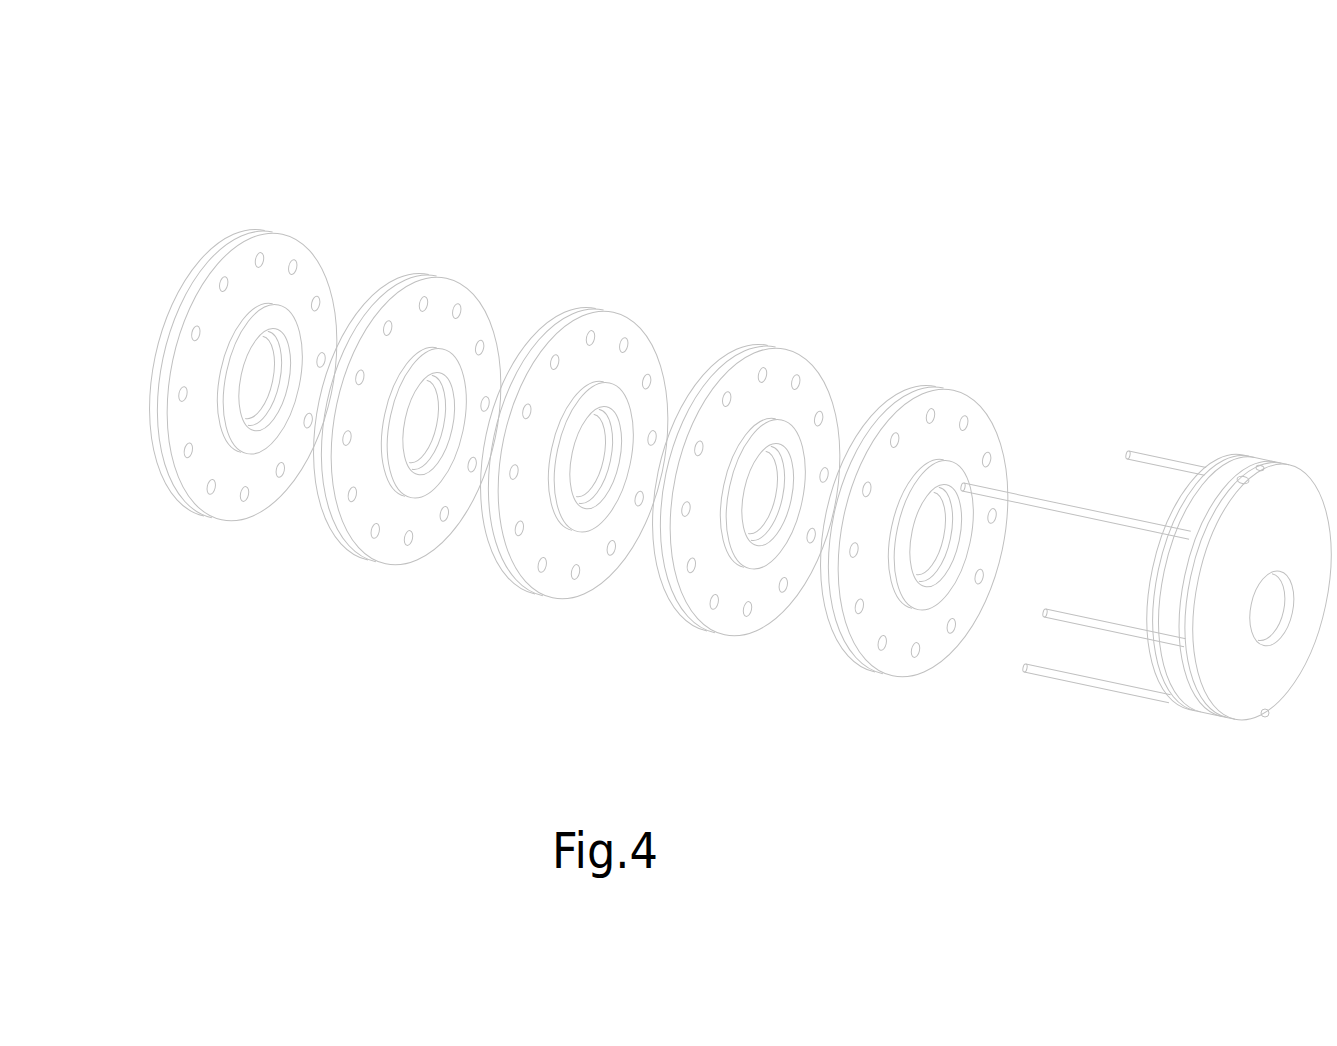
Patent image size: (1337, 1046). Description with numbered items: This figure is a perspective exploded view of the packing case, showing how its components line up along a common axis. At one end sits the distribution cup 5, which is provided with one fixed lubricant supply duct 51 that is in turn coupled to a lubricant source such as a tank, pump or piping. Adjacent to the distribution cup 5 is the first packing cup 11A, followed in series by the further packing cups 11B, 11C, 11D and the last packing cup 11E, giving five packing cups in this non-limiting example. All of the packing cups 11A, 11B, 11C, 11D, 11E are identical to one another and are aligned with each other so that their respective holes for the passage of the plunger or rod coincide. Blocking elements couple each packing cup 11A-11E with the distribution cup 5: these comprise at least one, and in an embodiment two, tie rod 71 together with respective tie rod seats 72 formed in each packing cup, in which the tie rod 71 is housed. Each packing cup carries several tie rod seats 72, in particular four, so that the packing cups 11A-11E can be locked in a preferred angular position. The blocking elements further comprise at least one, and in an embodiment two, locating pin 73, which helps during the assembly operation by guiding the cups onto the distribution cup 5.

The distribution cup 5 is at (1231, 636).
The first packing cup 11A is at (995, 403).
The packing cup 11B is at (825, 360).
The packing cup 11C is at (655, 323).
The packing cup 11D is at (482, 288).
The last packing cup 11E is at (310, 245).
The lubricant supply duct 51 is at (1260, 449).
The tie rod 71 is at (1075, 500).
The tie rod seat 72 is at (587, 409).
The locating pin 73 is at (1114, 535).